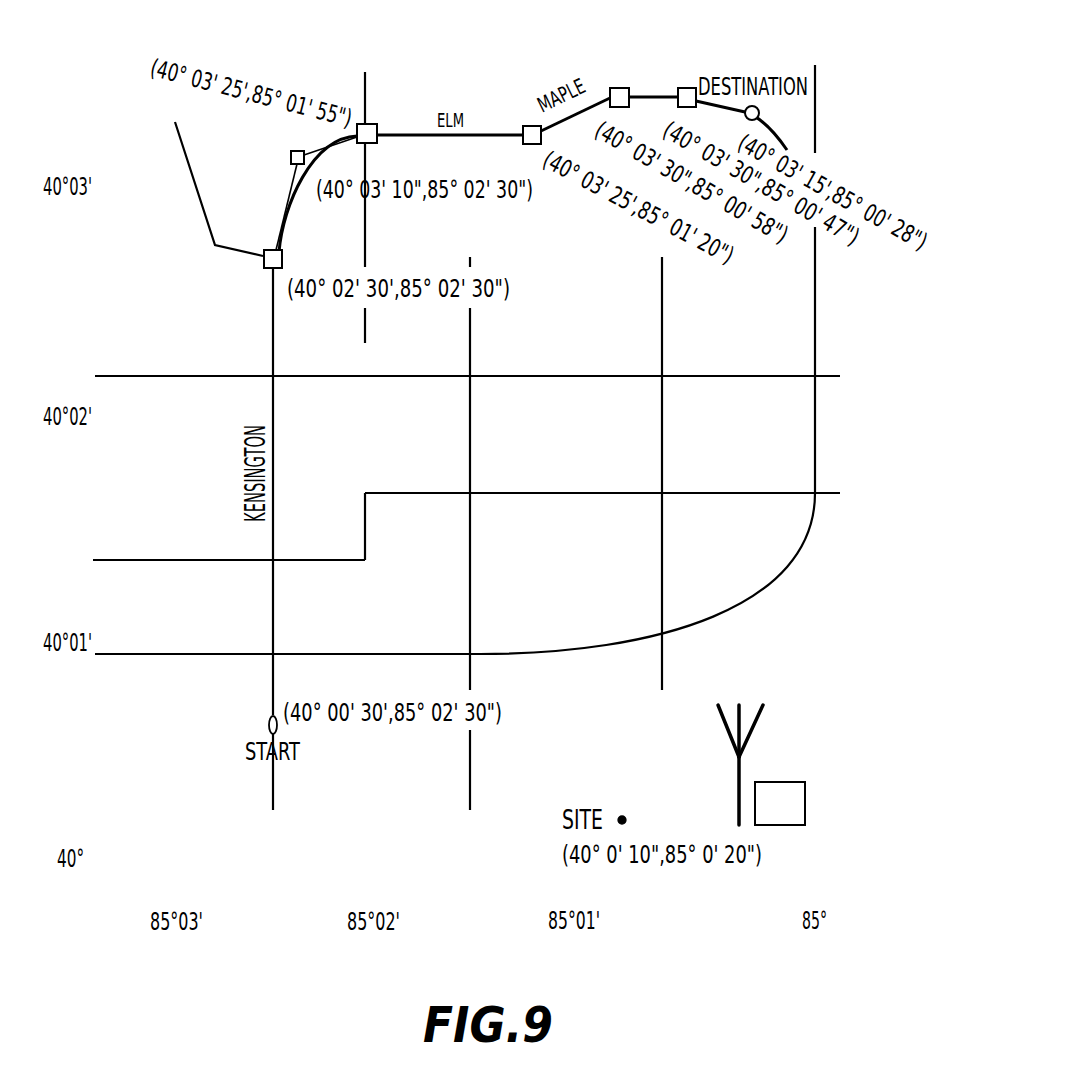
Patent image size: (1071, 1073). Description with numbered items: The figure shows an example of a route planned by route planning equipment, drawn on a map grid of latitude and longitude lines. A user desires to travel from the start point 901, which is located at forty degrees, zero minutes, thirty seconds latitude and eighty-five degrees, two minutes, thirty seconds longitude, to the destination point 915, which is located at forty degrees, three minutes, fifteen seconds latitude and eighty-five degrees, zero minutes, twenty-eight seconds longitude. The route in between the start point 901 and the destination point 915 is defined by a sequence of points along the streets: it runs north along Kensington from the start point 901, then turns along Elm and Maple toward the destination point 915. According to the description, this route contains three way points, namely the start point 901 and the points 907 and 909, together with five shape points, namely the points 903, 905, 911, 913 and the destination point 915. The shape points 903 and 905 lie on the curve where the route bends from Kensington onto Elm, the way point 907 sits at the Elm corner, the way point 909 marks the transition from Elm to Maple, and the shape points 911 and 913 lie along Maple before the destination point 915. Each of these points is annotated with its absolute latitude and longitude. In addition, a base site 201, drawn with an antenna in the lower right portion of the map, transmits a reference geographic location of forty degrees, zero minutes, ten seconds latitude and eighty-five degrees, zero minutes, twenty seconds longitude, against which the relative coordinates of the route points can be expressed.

The base site 201 is at (773, 782).
The start point 901 is at (303, 750).
The shape point 903 is at (266, 252).
The shape point 905 is at (291, 157).
The way point 907 is at (377, 127).
The way point 909 is at (527, 127).
The shape point 911 is at (618, 88).
The shape point 913 is at (680, 88).
The destination point 915 is at (759, 113).